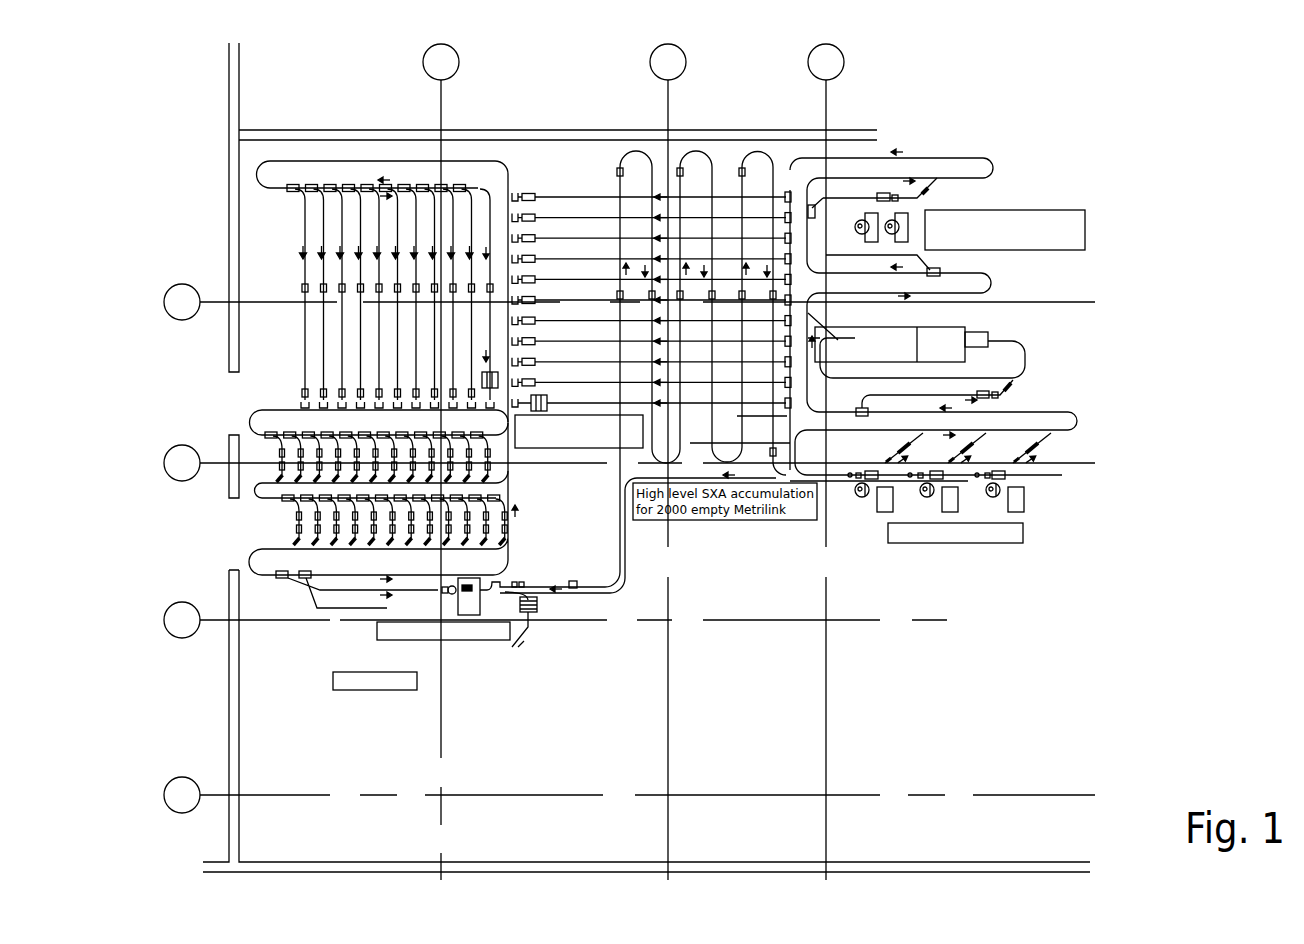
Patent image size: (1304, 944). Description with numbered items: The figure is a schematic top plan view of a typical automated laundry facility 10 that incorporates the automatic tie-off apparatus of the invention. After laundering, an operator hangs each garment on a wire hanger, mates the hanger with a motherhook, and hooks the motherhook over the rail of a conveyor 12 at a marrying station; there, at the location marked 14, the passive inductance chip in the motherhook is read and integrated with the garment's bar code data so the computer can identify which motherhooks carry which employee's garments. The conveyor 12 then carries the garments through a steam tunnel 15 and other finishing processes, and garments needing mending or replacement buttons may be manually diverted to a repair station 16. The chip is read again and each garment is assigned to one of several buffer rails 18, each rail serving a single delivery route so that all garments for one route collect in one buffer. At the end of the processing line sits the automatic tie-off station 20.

The automated laundry facility 10 is at (708, 608).
The conveyor 12 is at (1069, 432).
The marrying station 14 is at (868, 542).
The steam tunnel 15 is at (952, 355).
The repair station 16 is at (978, 210).
The buffer rails 18 is at (555, 184).
The automatic tie-off station 20 is at (463, 668).